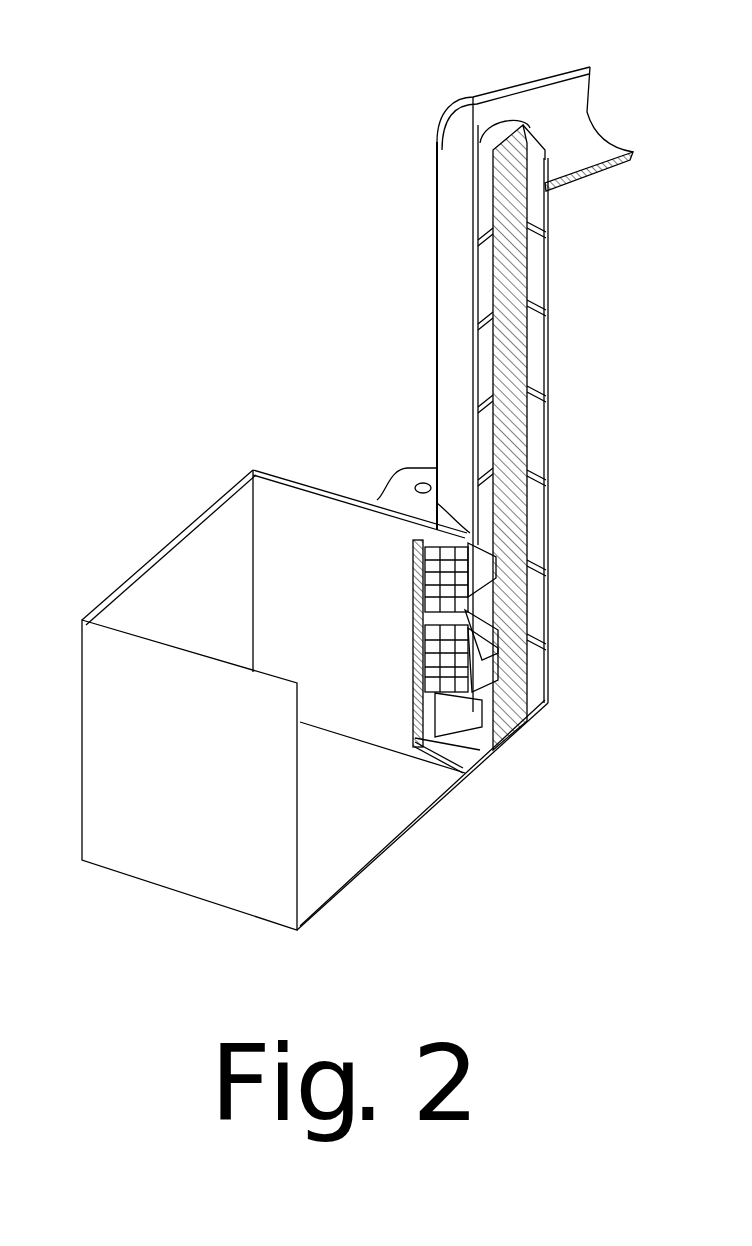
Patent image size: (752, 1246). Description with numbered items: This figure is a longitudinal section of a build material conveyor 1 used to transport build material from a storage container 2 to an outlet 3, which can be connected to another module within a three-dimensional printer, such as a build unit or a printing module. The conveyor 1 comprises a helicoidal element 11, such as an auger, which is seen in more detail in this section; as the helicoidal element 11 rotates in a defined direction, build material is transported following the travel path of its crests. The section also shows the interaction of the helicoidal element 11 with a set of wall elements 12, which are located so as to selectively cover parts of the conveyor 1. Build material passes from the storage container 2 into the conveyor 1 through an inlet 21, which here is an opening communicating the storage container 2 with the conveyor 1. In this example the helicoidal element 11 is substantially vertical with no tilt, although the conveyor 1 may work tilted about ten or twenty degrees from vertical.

The build material conveyor 1 is at (548, 378).
The storage container 2 is at (207, 620).
The outlet 3 is at (562, 115).
The helicoidal element 11 is at (478, 713).
The wall elements 12 is at (450, 592).
The inlet 21 is at (433, 748).